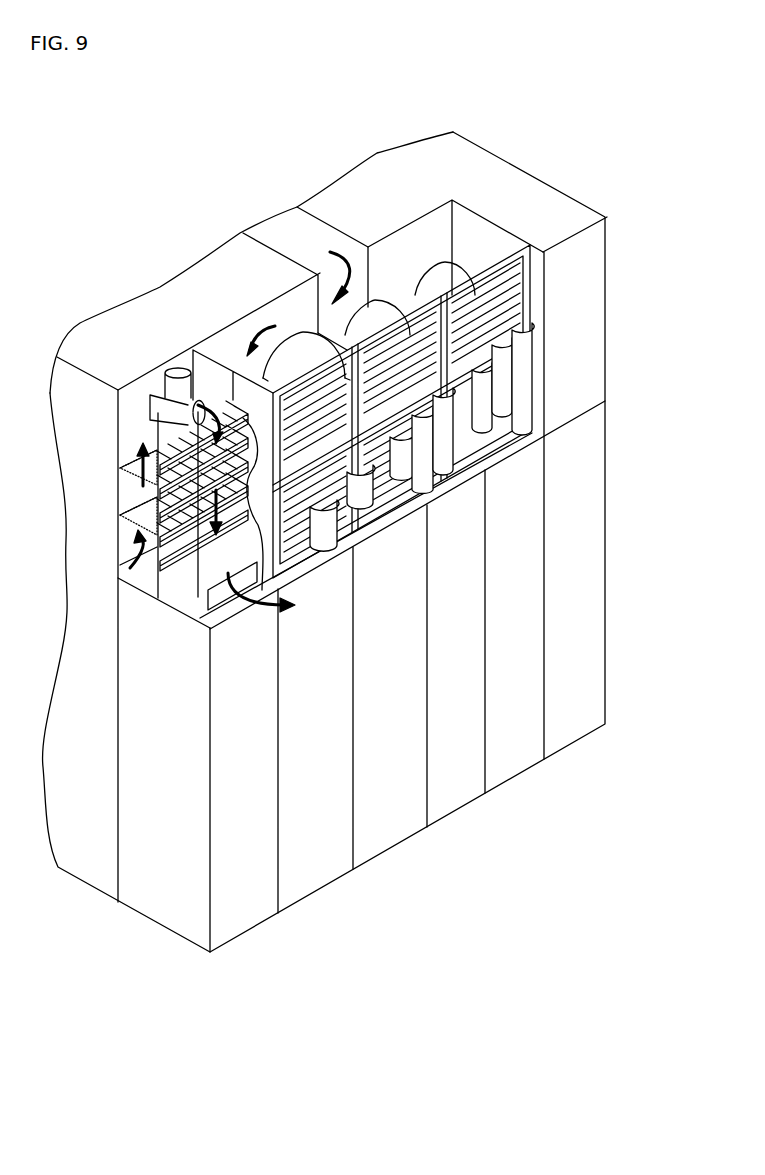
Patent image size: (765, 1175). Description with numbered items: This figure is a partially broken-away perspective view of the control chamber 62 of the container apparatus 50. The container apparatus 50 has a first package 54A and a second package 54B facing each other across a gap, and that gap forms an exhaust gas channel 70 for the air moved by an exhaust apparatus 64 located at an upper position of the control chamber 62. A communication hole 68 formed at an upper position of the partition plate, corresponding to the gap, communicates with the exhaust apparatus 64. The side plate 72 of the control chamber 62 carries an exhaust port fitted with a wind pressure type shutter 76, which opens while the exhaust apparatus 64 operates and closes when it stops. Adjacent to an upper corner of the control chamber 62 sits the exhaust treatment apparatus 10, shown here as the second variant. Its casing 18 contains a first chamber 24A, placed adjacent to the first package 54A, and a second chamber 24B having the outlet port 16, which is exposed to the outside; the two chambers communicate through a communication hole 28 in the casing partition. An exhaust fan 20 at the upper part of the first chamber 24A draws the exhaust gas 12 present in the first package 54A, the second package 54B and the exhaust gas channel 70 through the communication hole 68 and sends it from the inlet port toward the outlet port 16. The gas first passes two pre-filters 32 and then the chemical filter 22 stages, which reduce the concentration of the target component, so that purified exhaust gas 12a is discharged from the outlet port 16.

The container apparatus 50 is at (158, 137).
The control chamber 62 is at (552, 186).
The first package 54A is at (222, 265).
The second package 54B is at (453, 148).
The exhaust gas channel 70 is at (285, 225).
The communication hole 68 is at (347, 245).
The exhaust apparatus 64 is at (475, 243).
The exhaust gas 12 is at (330, 252).
The purified exhaust gas 12a is at (265, 605).
The wind pressure type shutter 76 is at (508, 283).
The casing 18 is at (118, 440).
The first chamber 24A is at (128, 555).
The second chamber 24B is at (222, 388).
The exhaust fan 20 is at (172, 370).
The communication hole 28 is at (160, 400).
The pre-filters 32 is at (135, 495).
The chemical filter 22 is at (177, 597).
The outlet port 16 is at (222, 598).
The side plate 72 is at (585, 500).
The exhaust treatment apparatus 10 is at (180, 350).